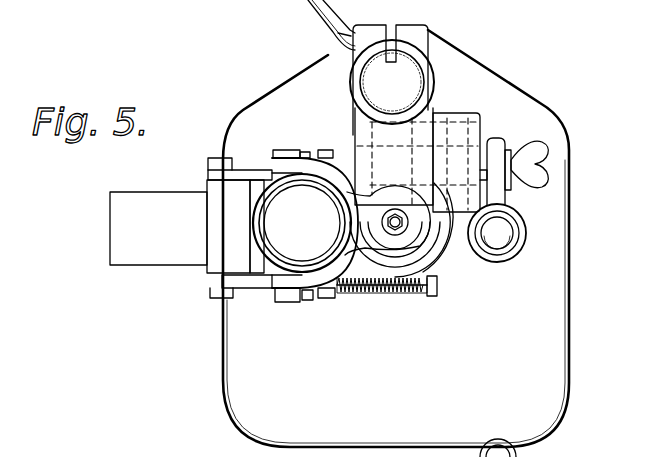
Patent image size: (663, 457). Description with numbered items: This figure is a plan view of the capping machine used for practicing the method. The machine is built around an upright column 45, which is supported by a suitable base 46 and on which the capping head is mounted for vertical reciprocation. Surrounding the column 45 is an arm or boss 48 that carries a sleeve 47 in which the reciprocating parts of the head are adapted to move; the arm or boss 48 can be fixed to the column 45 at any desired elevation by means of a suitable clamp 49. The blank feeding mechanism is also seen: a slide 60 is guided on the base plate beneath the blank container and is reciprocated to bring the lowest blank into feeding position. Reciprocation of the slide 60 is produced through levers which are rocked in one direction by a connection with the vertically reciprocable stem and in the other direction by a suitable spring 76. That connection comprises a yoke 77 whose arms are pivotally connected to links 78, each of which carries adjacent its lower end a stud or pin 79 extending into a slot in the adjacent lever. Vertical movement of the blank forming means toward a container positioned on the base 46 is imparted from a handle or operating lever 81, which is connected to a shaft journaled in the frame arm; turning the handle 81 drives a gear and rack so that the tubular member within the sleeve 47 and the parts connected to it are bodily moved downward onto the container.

The column 45 is at (407, 83).
The base 46 is at (530, 298).
The sleeve 47 is at (422, 246).
The arm or boss 48 is at (356, 128).
The clamp 49 is at (328, 12).
The slide 60 is at (226, 237).
The spring 76 is at (413, 297).
The yoke 77 is at (357, 296).
The links 78 is at (283, 150).
The stud or pin 79 is at (305, 301).
The handle or operating lever 81 is at (497, 230).